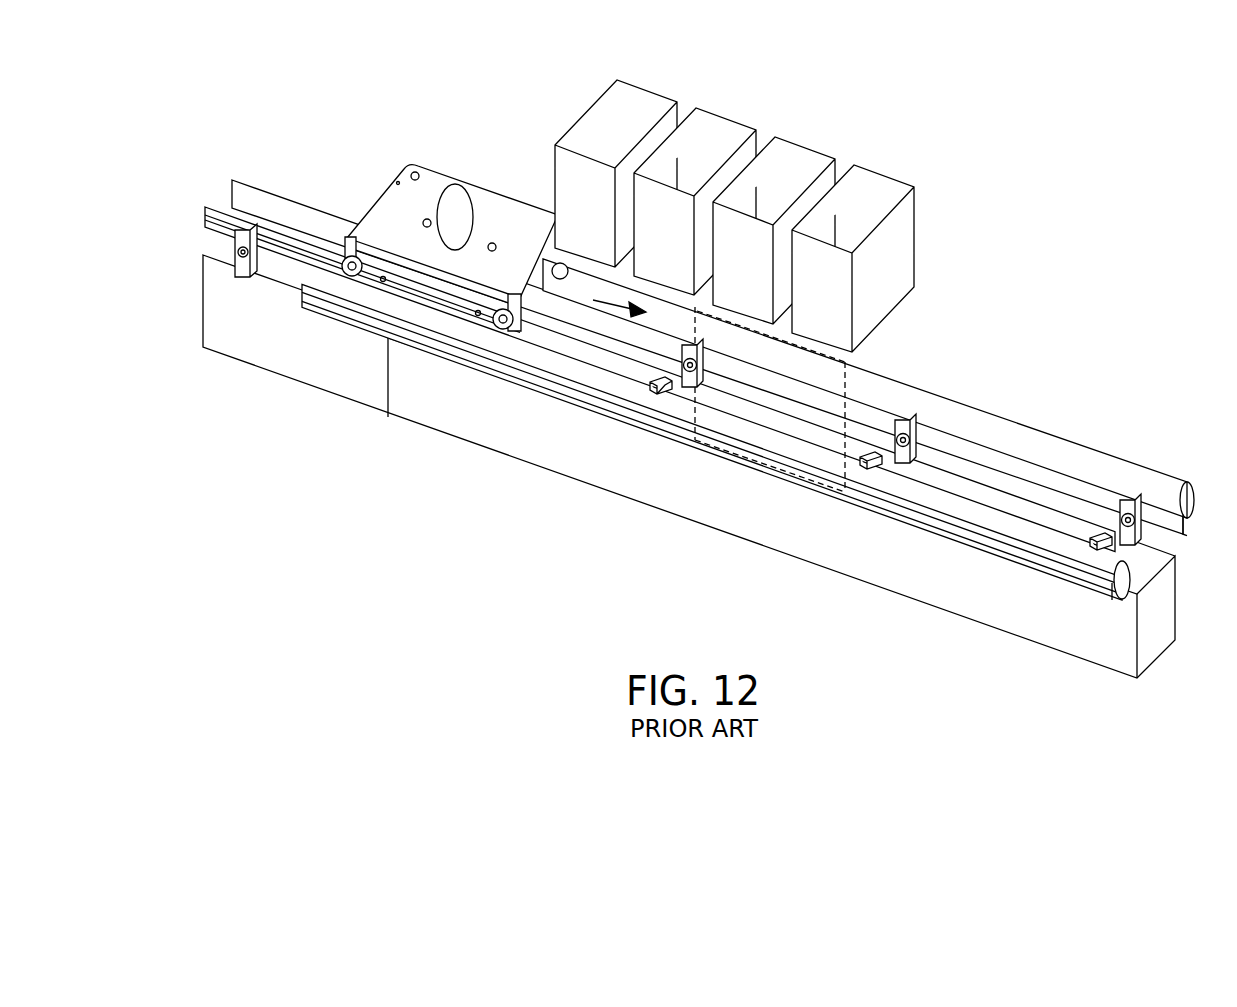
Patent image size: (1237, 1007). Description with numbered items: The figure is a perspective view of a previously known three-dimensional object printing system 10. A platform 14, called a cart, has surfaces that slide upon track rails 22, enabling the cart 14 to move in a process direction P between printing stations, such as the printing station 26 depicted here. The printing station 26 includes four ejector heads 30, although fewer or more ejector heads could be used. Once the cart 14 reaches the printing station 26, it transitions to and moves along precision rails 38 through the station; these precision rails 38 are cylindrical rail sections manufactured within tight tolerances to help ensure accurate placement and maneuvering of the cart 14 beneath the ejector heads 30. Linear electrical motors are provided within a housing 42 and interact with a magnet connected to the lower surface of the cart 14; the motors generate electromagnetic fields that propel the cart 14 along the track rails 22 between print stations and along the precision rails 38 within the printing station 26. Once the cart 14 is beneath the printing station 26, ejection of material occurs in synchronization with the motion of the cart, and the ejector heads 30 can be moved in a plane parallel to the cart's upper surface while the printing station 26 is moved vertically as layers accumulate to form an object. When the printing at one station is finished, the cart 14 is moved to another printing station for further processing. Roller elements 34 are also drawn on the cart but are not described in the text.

The three-dimensional object printing system 10 is at (421, 500).
The platform 14 is at (476, 179).
The track rails 22 is at (208, 205).
The printing station 26 is at (750, 187).
The ejector heads 30 is at (734, 195).
The roller 34 is at (352, 238).
The precision rails 38 is at (992, 418).
The housing 42 is at (946, 602).
The process direction P is at (593, 302).